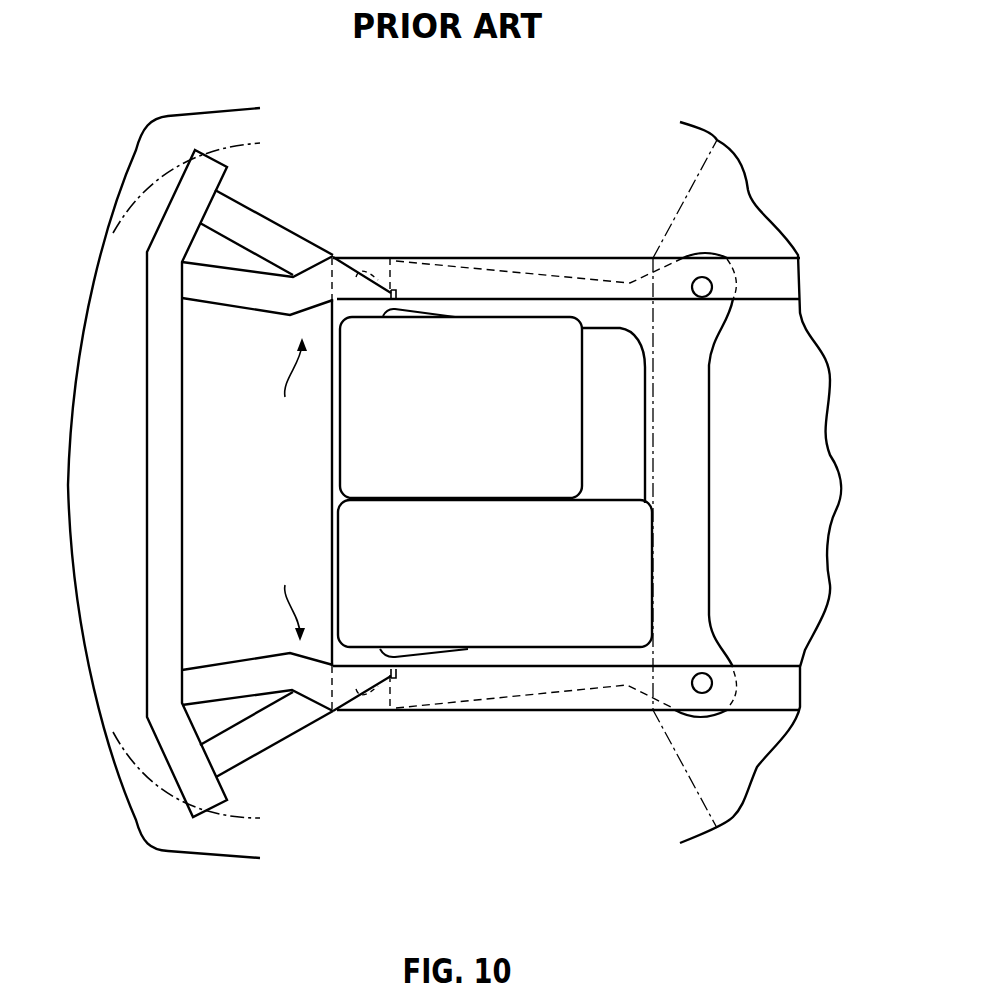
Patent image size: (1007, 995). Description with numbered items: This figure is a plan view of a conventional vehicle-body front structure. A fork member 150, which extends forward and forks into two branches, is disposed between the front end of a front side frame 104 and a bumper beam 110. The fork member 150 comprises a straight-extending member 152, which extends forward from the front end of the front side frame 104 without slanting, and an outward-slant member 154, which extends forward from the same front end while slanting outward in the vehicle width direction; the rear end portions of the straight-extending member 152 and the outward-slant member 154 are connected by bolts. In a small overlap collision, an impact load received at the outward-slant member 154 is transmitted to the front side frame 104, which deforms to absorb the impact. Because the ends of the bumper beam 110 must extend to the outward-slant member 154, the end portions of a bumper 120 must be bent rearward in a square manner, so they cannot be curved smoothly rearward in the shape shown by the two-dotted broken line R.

The bumper 120 is at (202, 112).
The bumper beam 110 is at (168, 468).
The straight-extending member 152 is at (222, 304).
The outward-slant member 154 is at (262, 230).
The front side frame 104 is at (570, 257).
The fork member 150 is at (286, 489).
The two-dotted broken line R is at (150, 191).